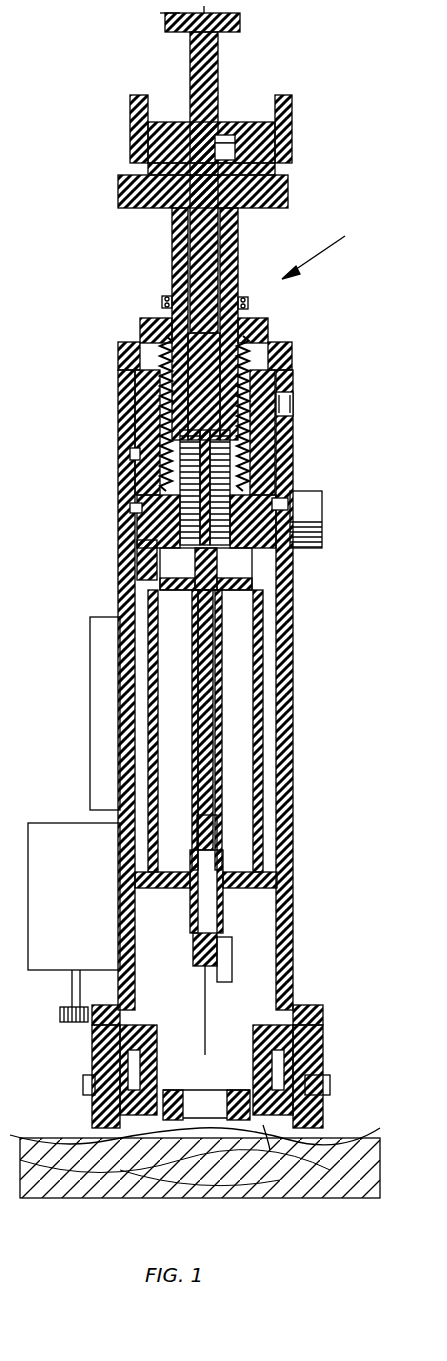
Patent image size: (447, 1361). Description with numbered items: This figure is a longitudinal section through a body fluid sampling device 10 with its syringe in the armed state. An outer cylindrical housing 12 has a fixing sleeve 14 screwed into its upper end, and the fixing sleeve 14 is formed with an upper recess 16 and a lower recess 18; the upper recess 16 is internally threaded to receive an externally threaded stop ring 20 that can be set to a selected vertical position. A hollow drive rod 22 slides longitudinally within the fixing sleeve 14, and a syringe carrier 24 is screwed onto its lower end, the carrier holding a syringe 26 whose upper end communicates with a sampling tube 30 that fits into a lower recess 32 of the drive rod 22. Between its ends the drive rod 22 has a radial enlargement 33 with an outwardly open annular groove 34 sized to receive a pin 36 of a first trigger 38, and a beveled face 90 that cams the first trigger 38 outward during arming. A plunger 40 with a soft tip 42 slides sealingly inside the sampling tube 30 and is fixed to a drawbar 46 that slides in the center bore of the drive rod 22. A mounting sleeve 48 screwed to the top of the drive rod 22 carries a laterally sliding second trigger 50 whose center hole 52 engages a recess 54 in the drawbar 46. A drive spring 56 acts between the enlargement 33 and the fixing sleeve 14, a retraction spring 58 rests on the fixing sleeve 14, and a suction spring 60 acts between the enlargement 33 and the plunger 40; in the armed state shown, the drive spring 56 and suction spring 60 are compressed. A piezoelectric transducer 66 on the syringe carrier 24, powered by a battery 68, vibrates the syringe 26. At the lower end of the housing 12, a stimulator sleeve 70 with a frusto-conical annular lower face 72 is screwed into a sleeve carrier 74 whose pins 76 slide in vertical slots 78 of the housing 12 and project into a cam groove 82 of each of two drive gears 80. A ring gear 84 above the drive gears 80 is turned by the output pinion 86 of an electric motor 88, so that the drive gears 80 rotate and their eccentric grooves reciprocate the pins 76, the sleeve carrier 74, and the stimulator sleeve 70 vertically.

The body fluid sampling device 10 is at (328, 246).
The outer cylindrical housing 12 is at (293, 610).
The fixing sleeve 14 is at (140, 426).
The upper recess 16 is at (152, 381).
The lower recess 18 is at (124, 456).
The stop ring 20 is at (152, 322).
The drive rod 22 is at (172, 240).
The syringe carrier 24 is at (262, 690).
The syringe 26 is at (210, 990).
The sampling tube 30 is at (222, 742).
The lower recess 32 is at (232, 569).
The radial enlargement 33 is at (126, 545).
The annular groove 34 is at (140, 520).
The pin 36 is at (300, 515).
The first trigger 38 is at (308, 521).
The plunger 40 is at (215, 648).
The soft tip 42 is at (218, 832).
The drawbar 46 is at (190, 54).
The mounting sleeve 48 is at (290, 196).
The second trigger 50 is at (293, 116).
The center hole 52 is at (225, 135).
The recess 54 is at (296, 152).
The drive spring 56 is at (290, 405).
The retraction spring 58 is at (248, 302).
The suction spring 60 is at (180, 490).
The piezoelectric transducer 66 is at (233, 955).
The battery 68 is at (90, 705).
The stimulator sleeve 70 is at (166, 1122).
The annular lower face 72 is at (305, 1135).
The sleeve carrier 74 is at (265, 1125).
The pins 76 is at (95, 1055).
The vertical slots 78 is at (320, 1086).
The drive gears 80 is at (325, 1031).
The cam groove 82 is at (83, 1085).
The ring gear 84 is at (300, 1008).
The output pinion 86 is at (60, 1013).
The electric motor 88 is at (66, 836).
The beveled face 90 is at (280, 498).